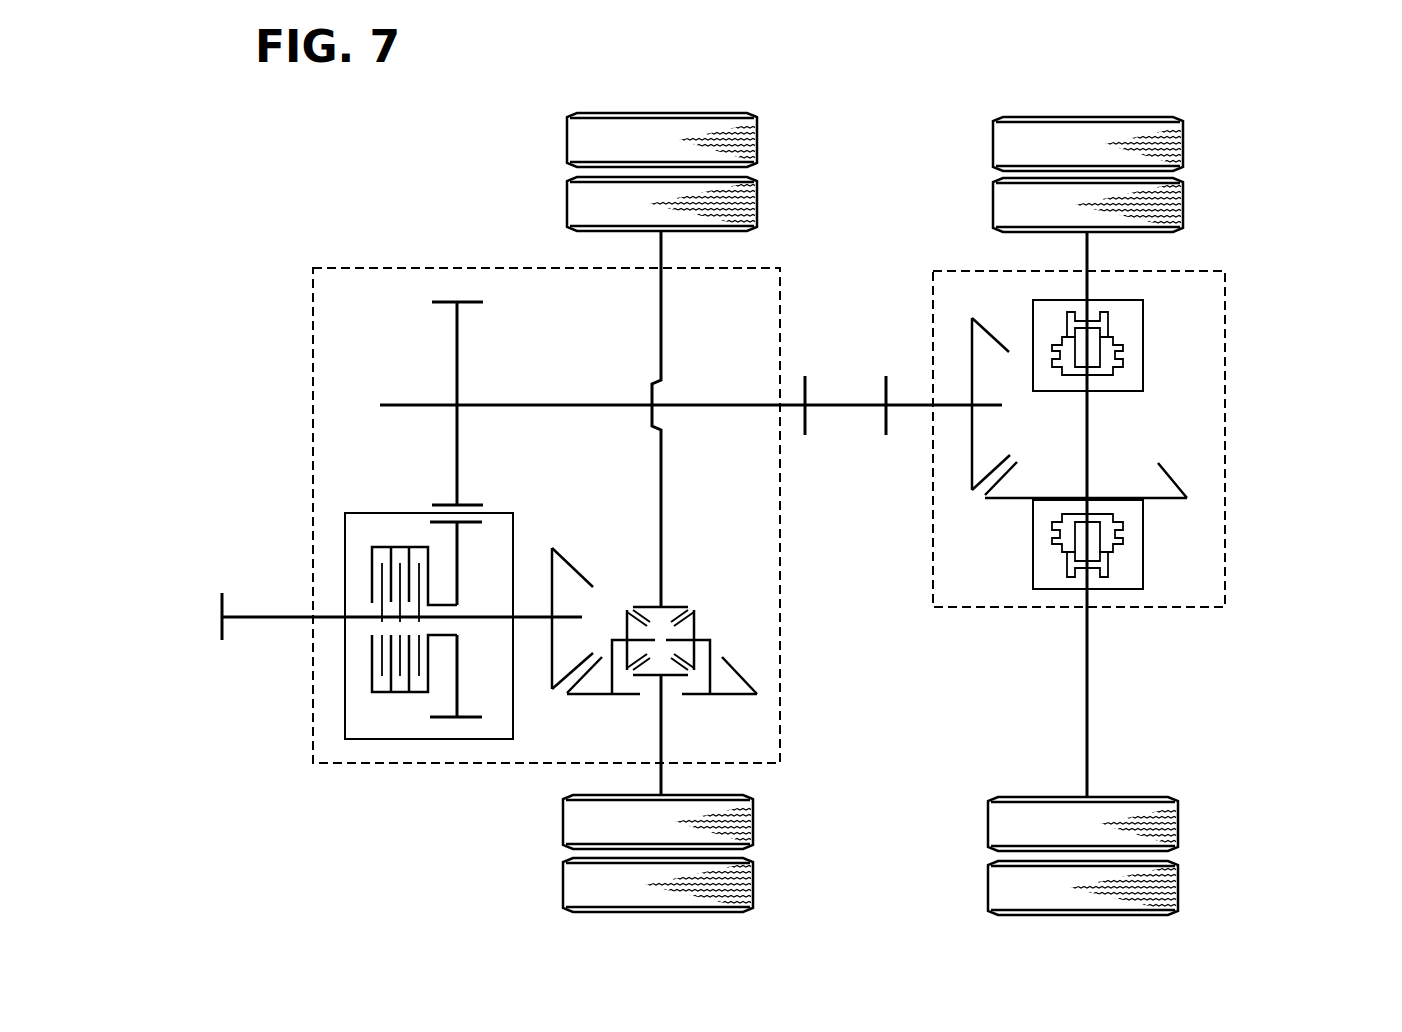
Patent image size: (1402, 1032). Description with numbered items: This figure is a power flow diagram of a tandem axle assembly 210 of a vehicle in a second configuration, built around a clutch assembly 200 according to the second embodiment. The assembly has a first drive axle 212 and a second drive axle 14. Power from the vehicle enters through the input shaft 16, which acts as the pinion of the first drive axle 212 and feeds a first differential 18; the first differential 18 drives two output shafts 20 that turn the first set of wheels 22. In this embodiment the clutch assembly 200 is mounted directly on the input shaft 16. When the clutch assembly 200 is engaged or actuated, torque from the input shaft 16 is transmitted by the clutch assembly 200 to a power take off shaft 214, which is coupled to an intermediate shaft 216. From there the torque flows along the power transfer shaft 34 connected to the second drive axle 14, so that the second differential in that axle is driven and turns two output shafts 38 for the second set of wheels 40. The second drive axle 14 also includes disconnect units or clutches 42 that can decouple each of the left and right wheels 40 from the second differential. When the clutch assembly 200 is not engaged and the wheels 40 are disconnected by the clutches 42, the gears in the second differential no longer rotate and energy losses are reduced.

The tandem axle assembly 210 is at (870, 185).
The first drive axle 212 is at (473, 265).
The power take off shaft 214 is at (457, 362).
The intermediate shaft 216 is at (538, 397).
The clutch assembly 200 is at (345, 555).
The input shaft 16 is at (285, 618).
The first differential 18 is at (578, 715).
The output shafts 20 is at (661, 315).
The power transfer shaft 34 is at (757, 405).
The first set of wheels 22 is at (767, 870).
The second drive axle 14 is at (1228, 350).
The disconnect units or clutches 42 is at (1143, 345).
The output shafts 38 is at (1090, 260).
The second set of wheels 40 is at (1193, 850).